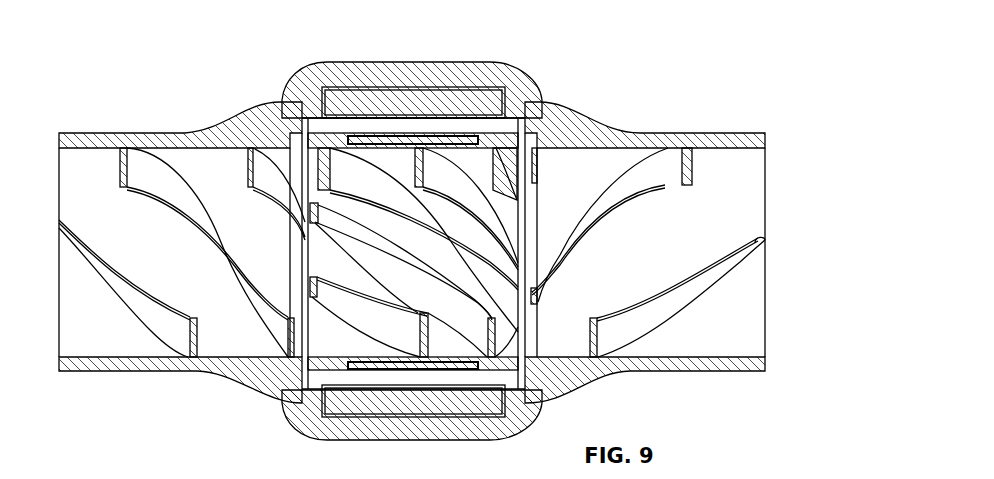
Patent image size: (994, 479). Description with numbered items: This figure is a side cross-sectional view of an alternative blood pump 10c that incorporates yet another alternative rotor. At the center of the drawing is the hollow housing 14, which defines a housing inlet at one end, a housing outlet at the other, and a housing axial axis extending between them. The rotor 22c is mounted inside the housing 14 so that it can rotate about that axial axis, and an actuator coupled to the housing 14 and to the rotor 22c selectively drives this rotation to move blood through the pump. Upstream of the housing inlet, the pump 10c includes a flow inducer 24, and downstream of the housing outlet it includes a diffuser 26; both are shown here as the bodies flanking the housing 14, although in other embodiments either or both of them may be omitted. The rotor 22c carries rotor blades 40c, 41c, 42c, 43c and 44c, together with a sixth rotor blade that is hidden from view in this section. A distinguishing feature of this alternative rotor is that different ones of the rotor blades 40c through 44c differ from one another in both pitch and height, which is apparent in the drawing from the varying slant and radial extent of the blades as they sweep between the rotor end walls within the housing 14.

The pump 10c is at (612, 78).
The housing 14 is at (503, 62).
The rotor 22c is at (338, 128).
The flow inducer 24 is at (122, 122).
The diffuser 26 is at (680, 125).
The rotor blade 40c is at (343, 302).
The rotor blade 41c is at (460, 332).
The rotor blade 42c is at (510, 308).
The rotor blade 43c is at (443, 173).
The rotor blade 44c is at (498, 167).